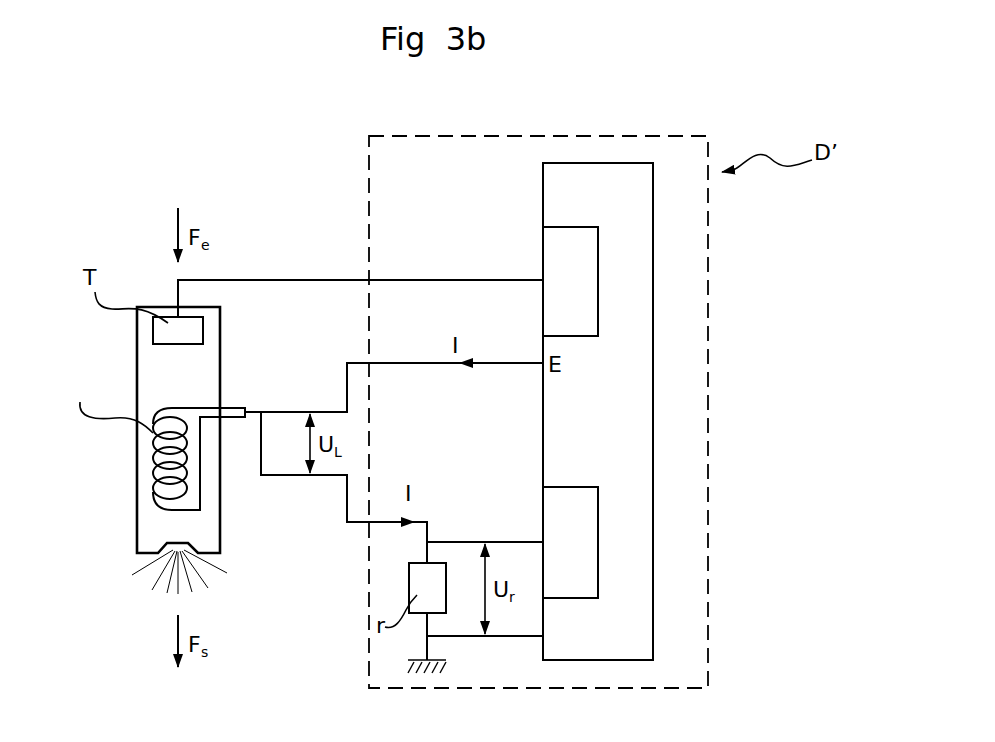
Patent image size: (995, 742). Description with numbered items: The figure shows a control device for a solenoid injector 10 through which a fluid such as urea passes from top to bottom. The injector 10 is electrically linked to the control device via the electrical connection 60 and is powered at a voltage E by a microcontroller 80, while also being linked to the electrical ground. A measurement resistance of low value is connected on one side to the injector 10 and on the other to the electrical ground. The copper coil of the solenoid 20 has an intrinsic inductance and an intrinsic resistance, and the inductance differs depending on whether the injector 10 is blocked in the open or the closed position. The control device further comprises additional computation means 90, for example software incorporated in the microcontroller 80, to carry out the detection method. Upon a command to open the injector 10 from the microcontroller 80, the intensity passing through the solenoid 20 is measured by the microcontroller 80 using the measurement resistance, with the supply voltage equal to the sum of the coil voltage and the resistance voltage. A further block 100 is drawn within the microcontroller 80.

The solenoid injector 10 is at (137, 498).
The solenoid 20 is at (173, 406).
The electrical connection 60 is at (281, 466).
The microcontroller 80 is at (630, 467).
The additional computation means 90 is at (573, 548).
The voltage measuring unit 100 is at (573, 273).